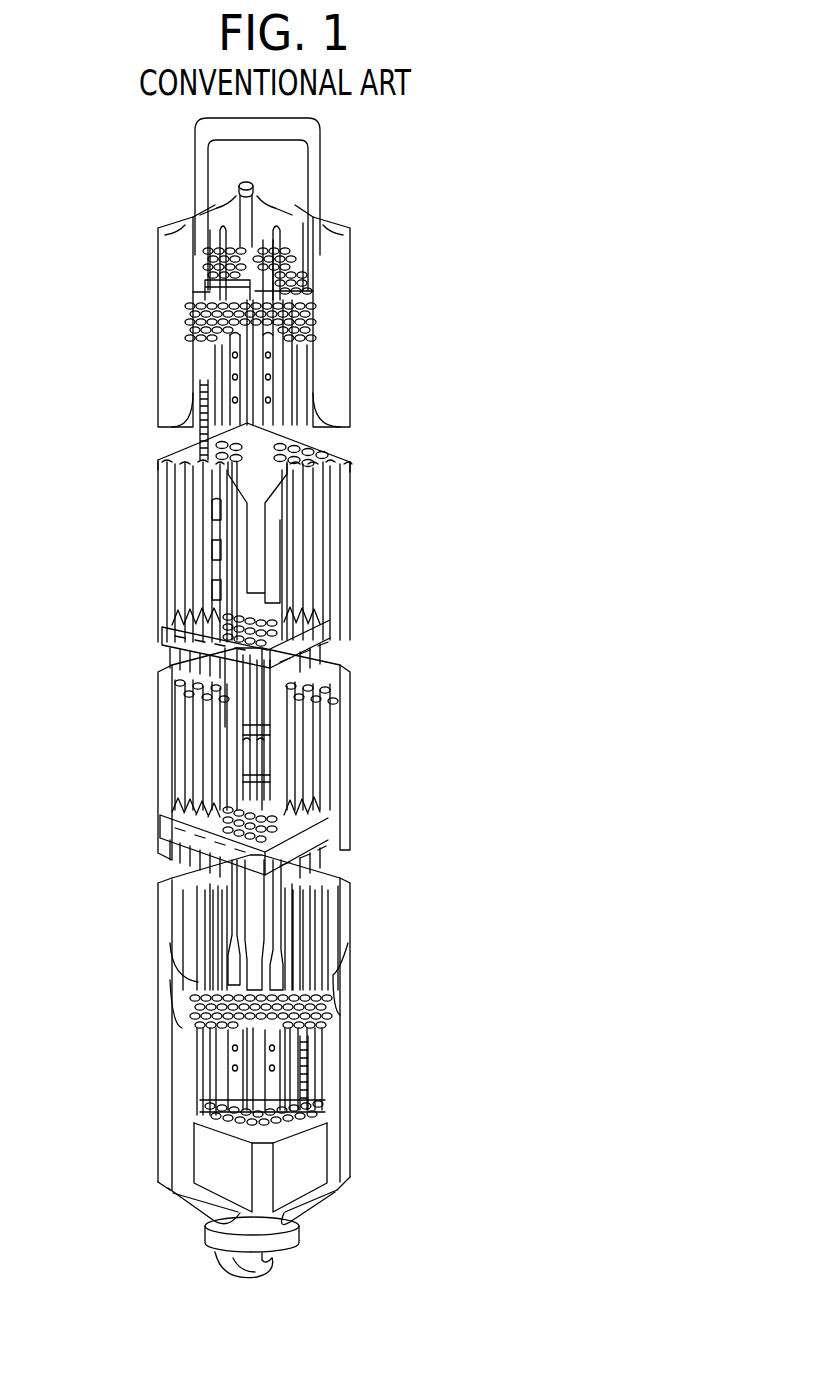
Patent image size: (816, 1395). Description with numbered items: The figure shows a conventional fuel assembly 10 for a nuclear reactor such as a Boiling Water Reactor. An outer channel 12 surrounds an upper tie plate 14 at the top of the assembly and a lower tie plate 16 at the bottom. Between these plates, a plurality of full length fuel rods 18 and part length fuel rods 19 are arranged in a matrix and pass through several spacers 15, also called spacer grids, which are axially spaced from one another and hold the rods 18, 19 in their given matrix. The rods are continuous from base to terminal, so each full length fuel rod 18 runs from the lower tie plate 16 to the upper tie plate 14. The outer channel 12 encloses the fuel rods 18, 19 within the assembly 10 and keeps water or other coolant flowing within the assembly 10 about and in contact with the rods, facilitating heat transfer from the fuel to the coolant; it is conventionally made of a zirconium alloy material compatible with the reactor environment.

The fuel assembly 10 is at (372, 249).
The outer channel 12 is at (342, 355).
The upper tie plate 14 is at (200, 295).
The spacers 15 is at (180, 620).
The lower tie plate 16 is at (318, 1170).
The full length fuel rods 18 is at (180, 565).
The part length fuel rods 19 is at (255, 790).